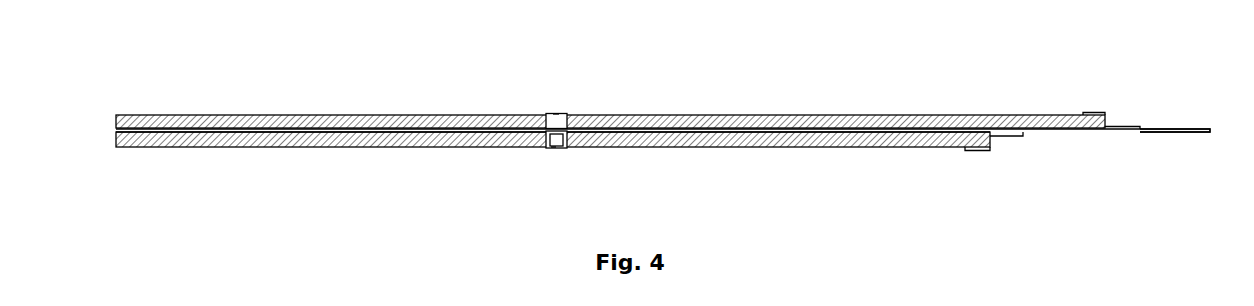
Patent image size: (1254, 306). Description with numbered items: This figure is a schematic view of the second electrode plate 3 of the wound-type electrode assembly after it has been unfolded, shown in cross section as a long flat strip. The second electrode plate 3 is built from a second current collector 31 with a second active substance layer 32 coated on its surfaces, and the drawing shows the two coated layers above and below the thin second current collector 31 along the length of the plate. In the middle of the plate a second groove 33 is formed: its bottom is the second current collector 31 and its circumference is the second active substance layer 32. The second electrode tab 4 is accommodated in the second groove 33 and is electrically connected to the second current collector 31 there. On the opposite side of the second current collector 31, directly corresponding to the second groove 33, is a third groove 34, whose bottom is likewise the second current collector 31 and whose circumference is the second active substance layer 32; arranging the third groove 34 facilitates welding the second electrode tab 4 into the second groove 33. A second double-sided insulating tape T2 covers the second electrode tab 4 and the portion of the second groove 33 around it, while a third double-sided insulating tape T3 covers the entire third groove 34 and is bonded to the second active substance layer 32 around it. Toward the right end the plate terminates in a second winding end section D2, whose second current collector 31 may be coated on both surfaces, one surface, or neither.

The second electrode plate 3 is at (663, 80).
The second current collector 31 is at (182, 143).
The second active substance layer 32 is at (133, 146).
The second groove 33 is at (566, 148).
The third groove 34 is at (553, 113).
The second electrode tab 4 is at (556, 150).
The second double-sided insulating tape T2 is at (551, 150).
The third double-sided insulating tape T3 is at (559, 113).
The second winding end section D2 is at (1160, 134).